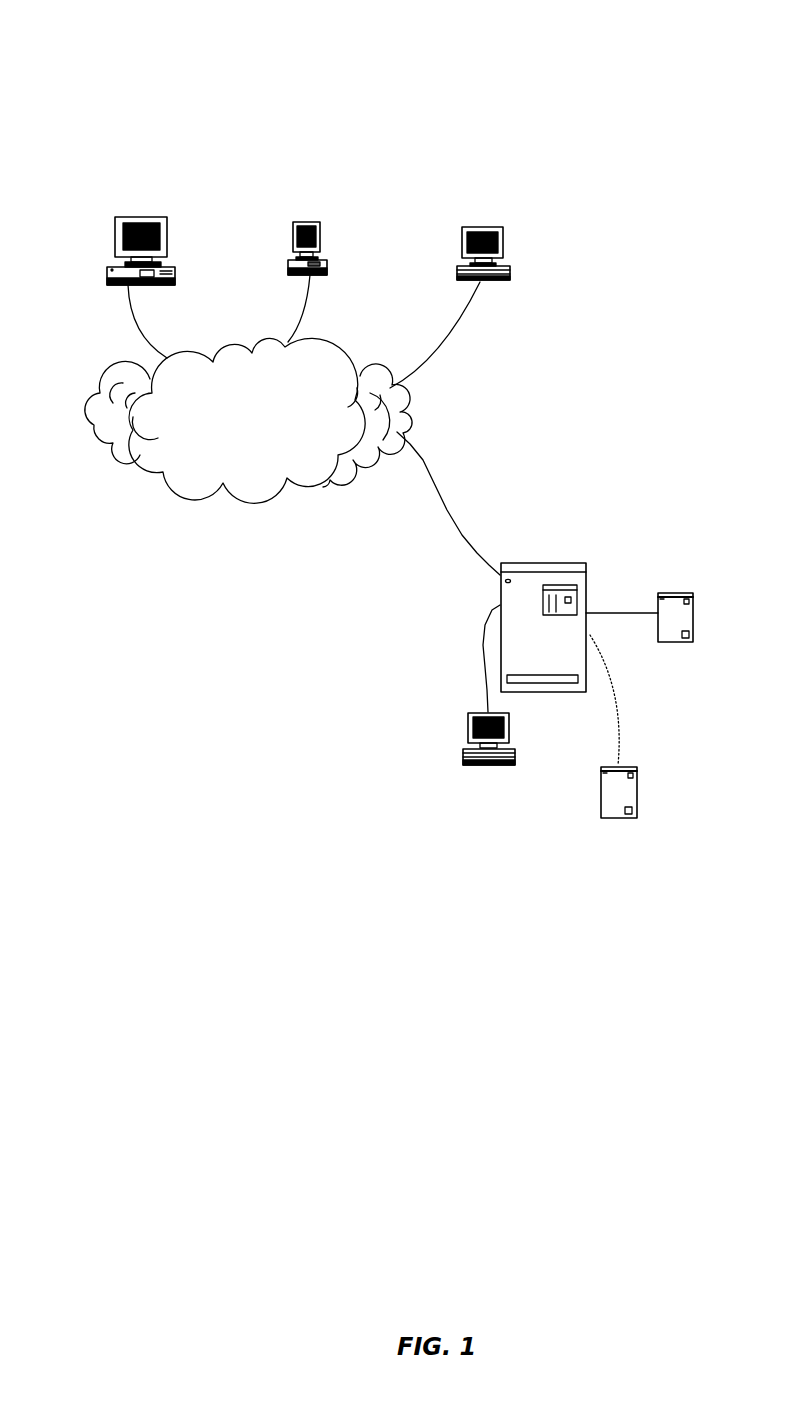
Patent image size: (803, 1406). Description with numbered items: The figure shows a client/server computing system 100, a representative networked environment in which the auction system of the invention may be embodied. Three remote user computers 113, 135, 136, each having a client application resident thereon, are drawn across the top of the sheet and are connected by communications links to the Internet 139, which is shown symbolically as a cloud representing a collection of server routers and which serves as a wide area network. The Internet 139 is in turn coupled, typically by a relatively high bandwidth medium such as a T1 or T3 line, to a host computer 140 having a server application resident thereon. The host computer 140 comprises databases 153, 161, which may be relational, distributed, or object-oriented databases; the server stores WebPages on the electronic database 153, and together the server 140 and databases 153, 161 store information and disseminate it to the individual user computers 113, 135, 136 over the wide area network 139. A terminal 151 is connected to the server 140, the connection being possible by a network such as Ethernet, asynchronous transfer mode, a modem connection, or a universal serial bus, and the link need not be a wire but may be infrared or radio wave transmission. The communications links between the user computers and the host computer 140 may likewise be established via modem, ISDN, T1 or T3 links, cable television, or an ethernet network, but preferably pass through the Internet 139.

The client/server computing system 100 is at (433, 78).
The remote user computer 113 is at (110, 263).
The remote user computer 135 is at (323, 258).
The remote user computer 136 is at (502, 262).
The Internet 139 is at (220, 483).
The host computer 140 is at (530, 563).
The terminal 151 is at (510, 739).
The database 153 is at (688, 648).
The database 161 is at (630, 822).